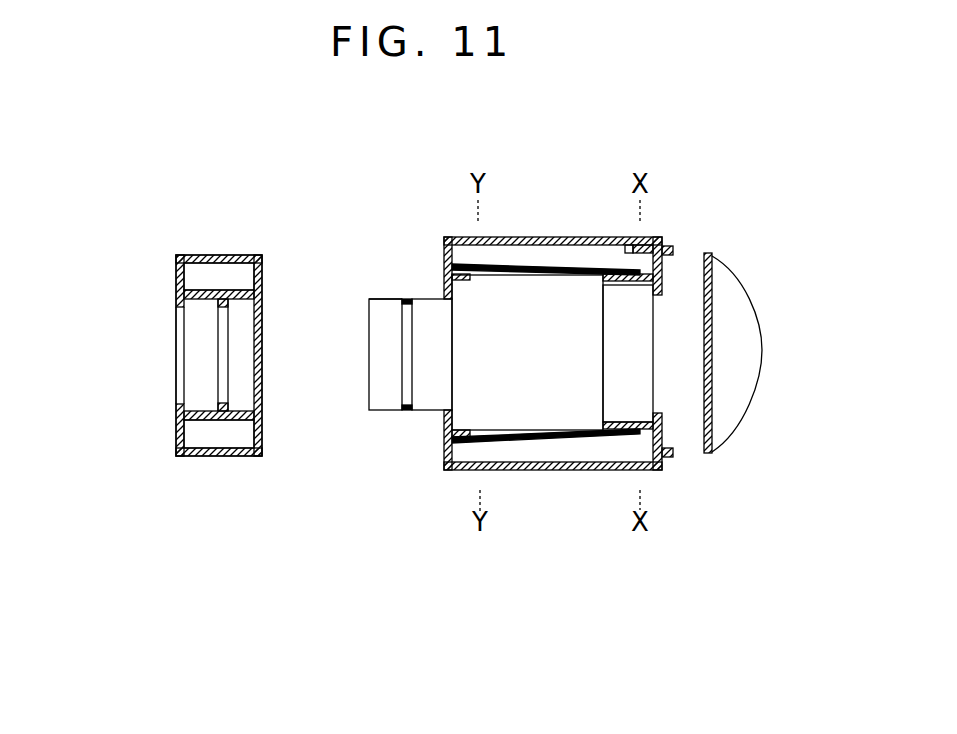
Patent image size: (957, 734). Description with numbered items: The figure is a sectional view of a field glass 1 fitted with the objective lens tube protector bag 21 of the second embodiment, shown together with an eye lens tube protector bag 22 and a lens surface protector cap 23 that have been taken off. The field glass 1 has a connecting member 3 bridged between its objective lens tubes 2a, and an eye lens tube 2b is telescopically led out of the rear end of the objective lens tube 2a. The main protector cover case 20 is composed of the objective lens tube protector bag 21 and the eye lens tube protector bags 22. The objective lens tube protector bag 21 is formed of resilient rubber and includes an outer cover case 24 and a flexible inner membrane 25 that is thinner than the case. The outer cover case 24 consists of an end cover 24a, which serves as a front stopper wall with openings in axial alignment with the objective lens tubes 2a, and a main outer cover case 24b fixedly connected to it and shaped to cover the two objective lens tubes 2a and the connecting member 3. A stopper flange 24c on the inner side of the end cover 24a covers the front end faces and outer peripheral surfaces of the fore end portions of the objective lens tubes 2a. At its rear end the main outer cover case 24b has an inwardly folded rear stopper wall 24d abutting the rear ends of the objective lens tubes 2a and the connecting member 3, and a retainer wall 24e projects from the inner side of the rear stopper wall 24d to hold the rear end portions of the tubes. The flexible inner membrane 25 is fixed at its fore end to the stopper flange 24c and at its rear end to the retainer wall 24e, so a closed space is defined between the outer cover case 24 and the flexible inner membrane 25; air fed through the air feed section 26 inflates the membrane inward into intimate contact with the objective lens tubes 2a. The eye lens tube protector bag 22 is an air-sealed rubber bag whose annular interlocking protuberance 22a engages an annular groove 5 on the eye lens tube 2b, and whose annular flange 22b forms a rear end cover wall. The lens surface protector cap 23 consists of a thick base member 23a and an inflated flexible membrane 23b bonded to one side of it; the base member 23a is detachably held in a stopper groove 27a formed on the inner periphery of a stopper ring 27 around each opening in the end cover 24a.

The field glass 1 is at (376, 424).
The objective lens tube 2a is at (645, 342).
The eye lens tube 2b is at (372, 300).
The connecting member 3 is at (503, 290).
The annular groove 5 is at (406, 298).
The main protector cover case 20 is at (774, 333).
The objective lens tube protector bag 21 is at (661, 482).
The eye lens tube protector bag 22 is at (163, 330).
The annular interlocking protuberance 22a is at (225, 420).
The annular flange 22b is at (178, 414).
The lens surface protector cap 23 is at (774, 388).
The base member 23a is at (712, 294).
The flexible membrane 23b is at (755, 392).
The outer cover case 24 is at (603, 356).
The end cover 24a is at (660, 240).
The main outer cover case 24b is at (558, 238).
The stopper flange 24c is at (637, 430).
The rear stopper wall 24d is at (447, 433).
The retainer wall 24e is at (458, 237).
The flexible inner membrane 25 is at (507, 440).
The air feed section 26 is at (636, 240).
The stopper ring 27 is at (674, 456).
The stopper groove 27a is at (678, 250).